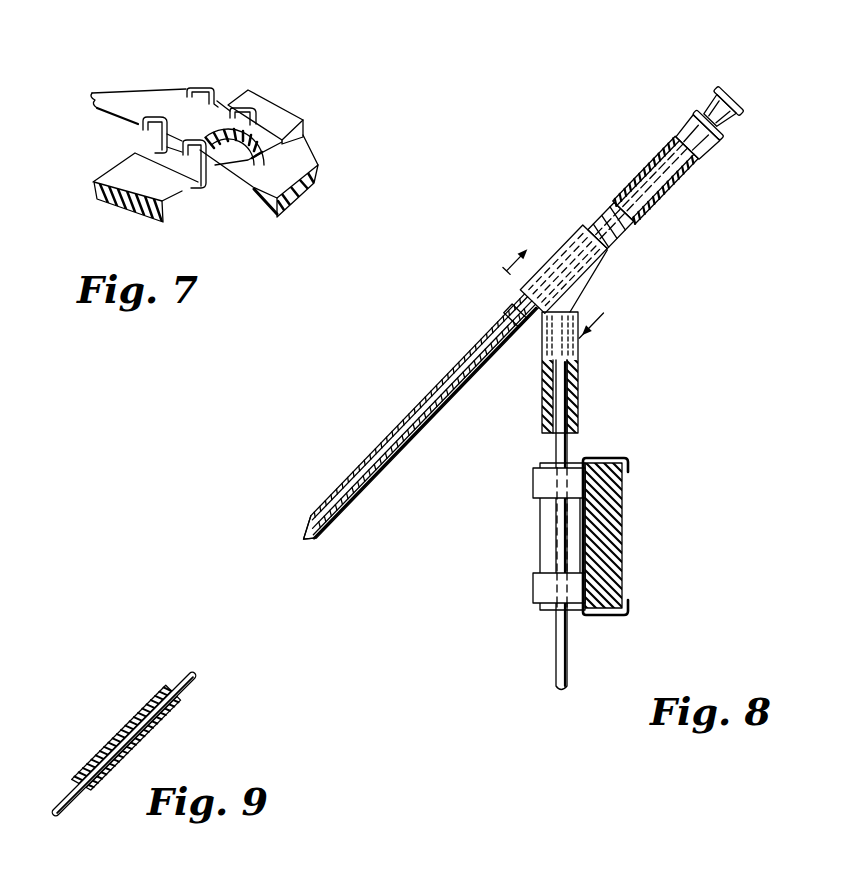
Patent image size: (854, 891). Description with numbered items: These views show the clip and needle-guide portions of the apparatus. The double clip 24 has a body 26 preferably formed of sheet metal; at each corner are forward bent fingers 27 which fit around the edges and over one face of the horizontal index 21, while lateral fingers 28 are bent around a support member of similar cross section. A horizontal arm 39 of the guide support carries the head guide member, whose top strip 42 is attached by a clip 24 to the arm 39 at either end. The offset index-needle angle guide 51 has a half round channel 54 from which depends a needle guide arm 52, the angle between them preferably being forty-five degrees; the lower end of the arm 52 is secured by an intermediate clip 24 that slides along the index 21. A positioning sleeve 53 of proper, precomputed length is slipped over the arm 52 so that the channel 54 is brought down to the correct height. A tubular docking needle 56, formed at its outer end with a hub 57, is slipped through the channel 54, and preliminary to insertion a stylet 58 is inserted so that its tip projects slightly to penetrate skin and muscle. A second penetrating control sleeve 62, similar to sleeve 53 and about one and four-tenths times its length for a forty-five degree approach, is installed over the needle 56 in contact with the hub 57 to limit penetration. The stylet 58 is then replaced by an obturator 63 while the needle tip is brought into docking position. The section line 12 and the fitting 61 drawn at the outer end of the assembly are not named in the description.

In FIG. 8, the section line 12- 12 is at (569, 278).
In FIG. 8, the horizontal index 21 is at (622, 523).
In FIG. 7, the double clip 24 is at (122, 152).
In FIG. 8, the double clip 24 is at (580, 446).
In FIG. 7, the body 26 is at (226, 172).
In FIG. 8, the body 26 is at (580, 545).
In FIG. 7, the forward bent fingers 27 is at (201, 88).
In FIG. 8, the forward bent fingers 27 is at (607, 463).
In FIG. 7, the lateral fingers 28 is at (218, 198).
In FIG. 8, the lateral fingers 28 is at (542, 483).
In FIG. 7, the horizontal arm 39 is at (178, 207).
In FIG. 7, the top strip 42 is at (148, 82).
In FIG. 8, the offset index-needle angle guide 51 is at (555, 226).
In FIG. 8, the needle guide arm 52 is at (567, 660).
In FIG. 8, the positioning sleeve 53 is at (578, 357).
In FIG. 8, the half round channel 54 is at (548, 253).
In FIG. 8, the docking needle 56 is at (465, 363).
In FIG. 9, the docking needle 56 is at (125, 725).
In FIG. 8, the hub 57 is at (695, 113).
In FIG. 8, the stylet 58 is at (312, 538).
In FIG. 8, the fitting 61 is at (722, 90).
In FIG. 8, the second penetrating control sleeve 62 is at (640, 167).
In FIG. 9, the obturator 63 is at (183, 692).